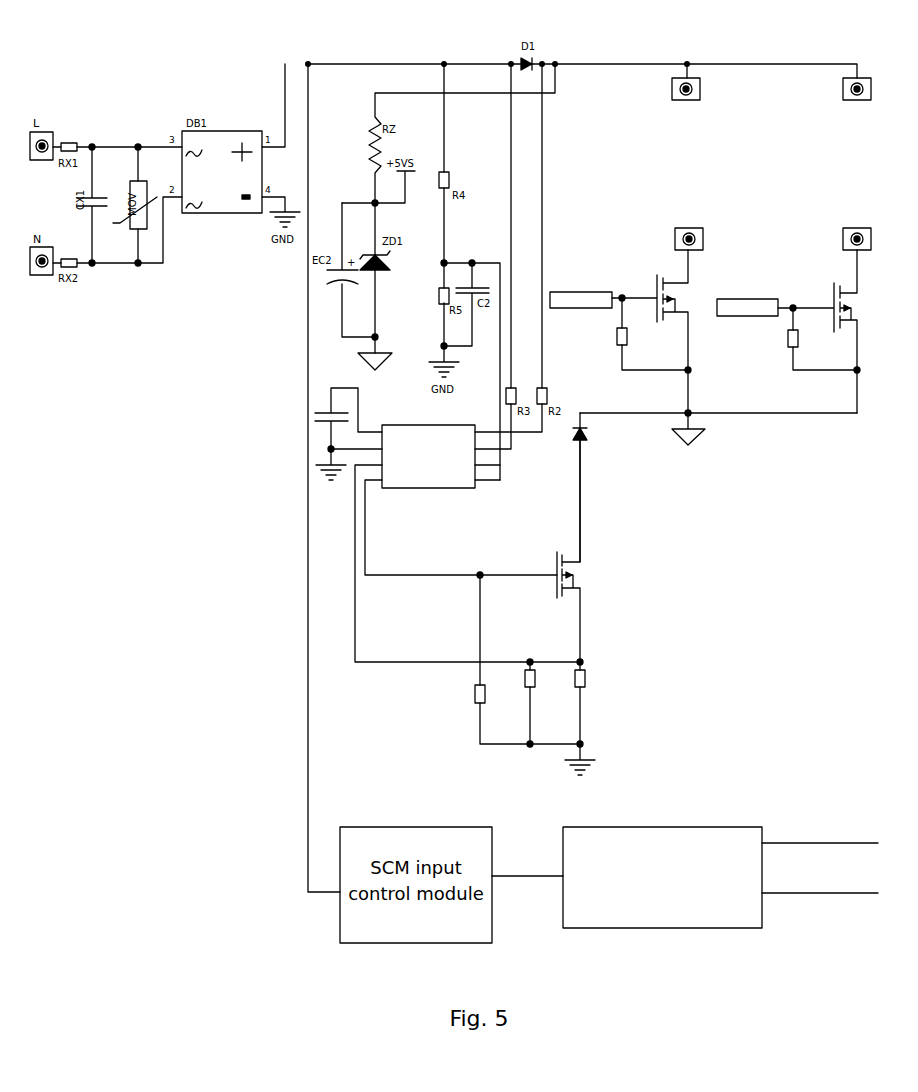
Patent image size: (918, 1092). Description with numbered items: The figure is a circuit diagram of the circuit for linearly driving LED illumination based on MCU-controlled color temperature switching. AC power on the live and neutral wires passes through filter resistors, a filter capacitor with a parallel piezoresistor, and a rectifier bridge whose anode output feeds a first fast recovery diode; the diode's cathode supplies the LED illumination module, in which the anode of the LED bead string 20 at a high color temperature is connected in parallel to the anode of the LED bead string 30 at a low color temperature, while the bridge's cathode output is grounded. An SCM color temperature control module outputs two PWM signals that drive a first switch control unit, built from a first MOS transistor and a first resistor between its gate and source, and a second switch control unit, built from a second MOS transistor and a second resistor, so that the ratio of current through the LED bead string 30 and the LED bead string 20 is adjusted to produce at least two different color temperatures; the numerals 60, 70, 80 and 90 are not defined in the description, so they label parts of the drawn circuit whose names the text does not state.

The LED bead string at a high color temperature 20 is at (828, 118).
The LED bead string at a low color temperature 30 is at (645, 115).
The constant current driving circuit 60 is at (337, 518).
The SCM processing module 70 is at (672, 822).
The PWM_C switching circuit 80 is at (575, 318).
The PWM_W switching circuit 90 is at (748, 327).